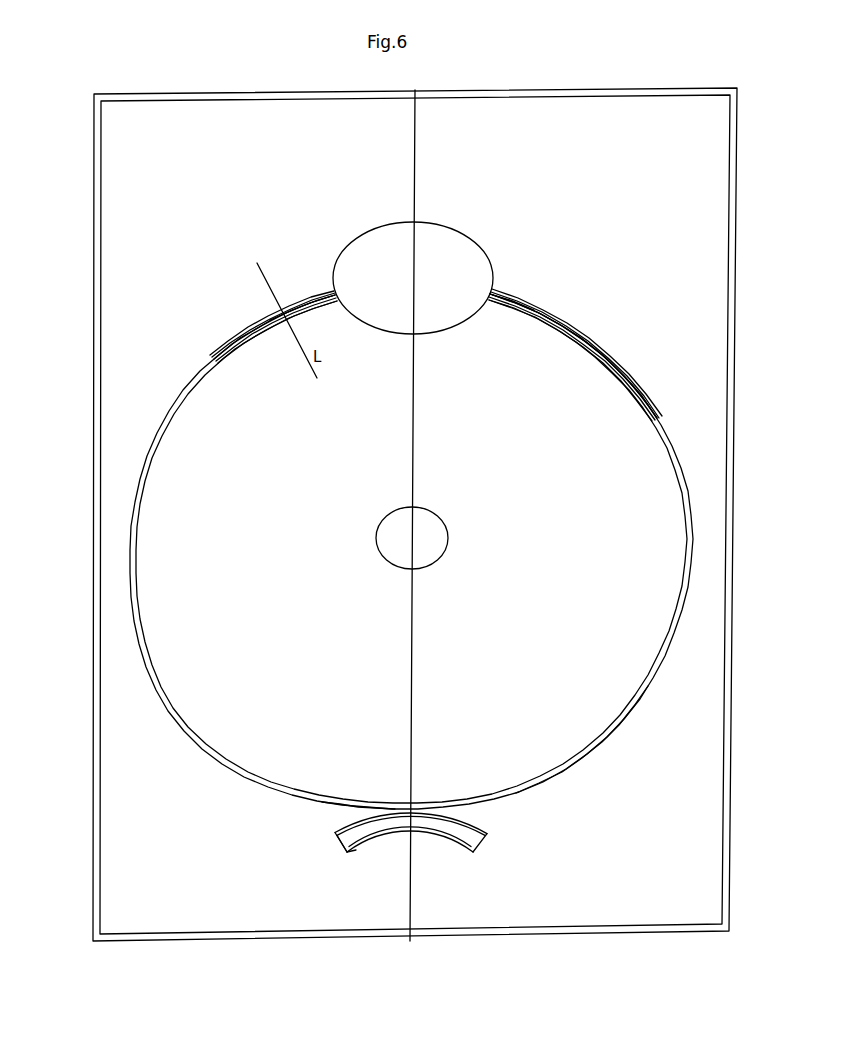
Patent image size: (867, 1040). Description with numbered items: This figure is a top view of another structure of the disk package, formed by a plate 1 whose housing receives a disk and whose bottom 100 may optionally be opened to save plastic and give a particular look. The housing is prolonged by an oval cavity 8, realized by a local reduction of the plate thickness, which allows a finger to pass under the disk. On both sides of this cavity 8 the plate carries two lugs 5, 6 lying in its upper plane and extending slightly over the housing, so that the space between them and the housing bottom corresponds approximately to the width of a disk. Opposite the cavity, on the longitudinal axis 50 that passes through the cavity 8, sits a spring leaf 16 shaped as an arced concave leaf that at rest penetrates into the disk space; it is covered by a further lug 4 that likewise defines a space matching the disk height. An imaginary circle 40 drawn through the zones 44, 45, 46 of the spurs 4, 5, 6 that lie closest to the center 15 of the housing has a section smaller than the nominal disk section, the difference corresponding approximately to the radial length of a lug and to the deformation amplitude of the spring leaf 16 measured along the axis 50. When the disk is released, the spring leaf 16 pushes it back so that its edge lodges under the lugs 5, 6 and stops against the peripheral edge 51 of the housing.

The plate 1 is at (526, 130).
The lug 4 is at (350, 813).
The lug 5 is at (267, 315).
The lug 6 is at (558, 318).
The cavity 8 is at (375, 247).
The center 15 is at (403, 537).
The spring leaf 16 is at (345, 852).
The imaginary circle 40 is at (623, 360).
The zone 44 is at (430, 800).
The zone 45 is at (227, 372).
The zone 46 is at (548, 323).
The longitudinal axis 50 is at (415, 913).
The peripheral edge 51 is at (512, 298).
The bottom 100 is at (213, 675).